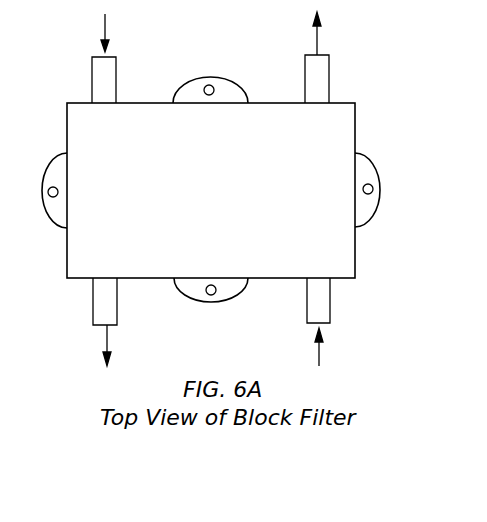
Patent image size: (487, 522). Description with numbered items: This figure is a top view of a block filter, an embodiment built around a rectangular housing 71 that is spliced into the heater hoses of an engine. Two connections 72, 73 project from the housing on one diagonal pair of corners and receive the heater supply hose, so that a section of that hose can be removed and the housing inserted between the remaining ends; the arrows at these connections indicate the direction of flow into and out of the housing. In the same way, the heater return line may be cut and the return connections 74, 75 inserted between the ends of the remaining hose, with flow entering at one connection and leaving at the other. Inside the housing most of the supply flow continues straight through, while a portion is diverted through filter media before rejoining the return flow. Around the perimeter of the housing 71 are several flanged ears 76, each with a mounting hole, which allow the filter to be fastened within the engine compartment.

The housing 71 is at (347, 135).
The connection 72 is at (333, 322).
The connection 73 is at (332, 57).
The return connection 74 is at (91, 58).
The return connection 75 is at (93, 322).
The flanged ear 76 is at (222, 78).